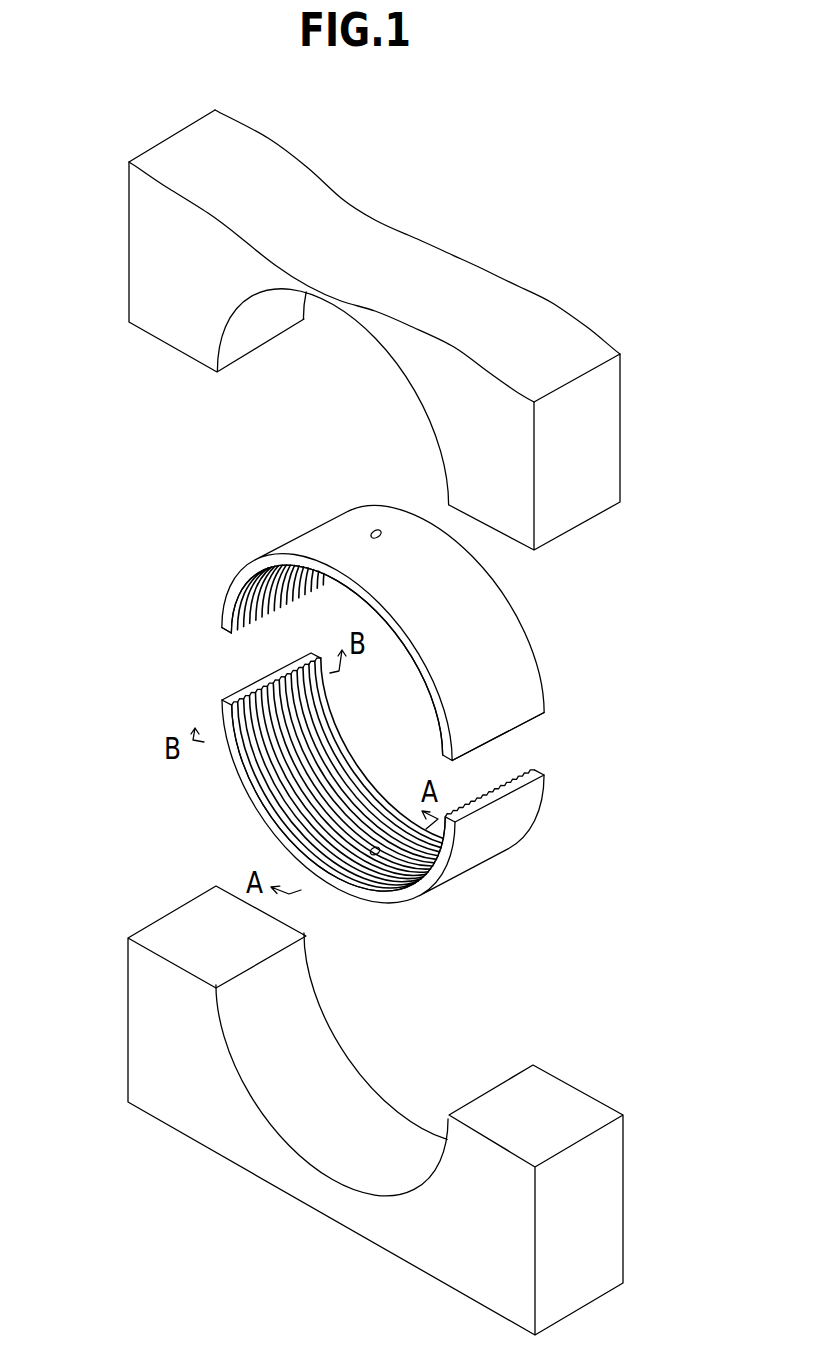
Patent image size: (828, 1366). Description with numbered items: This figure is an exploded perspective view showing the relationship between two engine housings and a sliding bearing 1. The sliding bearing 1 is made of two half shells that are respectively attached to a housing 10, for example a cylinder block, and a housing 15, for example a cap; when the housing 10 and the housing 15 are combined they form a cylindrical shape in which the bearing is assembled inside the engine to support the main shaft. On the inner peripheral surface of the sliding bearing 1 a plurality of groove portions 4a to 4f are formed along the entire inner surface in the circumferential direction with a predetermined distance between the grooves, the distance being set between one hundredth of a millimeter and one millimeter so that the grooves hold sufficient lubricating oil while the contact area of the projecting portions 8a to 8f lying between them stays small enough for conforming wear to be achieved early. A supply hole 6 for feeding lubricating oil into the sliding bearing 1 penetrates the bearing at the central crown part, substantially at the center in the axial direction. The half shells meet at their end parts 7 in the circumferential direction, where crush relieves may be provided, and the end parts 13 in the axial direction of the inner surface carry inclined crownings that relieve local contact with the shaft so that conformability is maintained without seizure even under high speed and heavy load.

The sliding bearing 1 is at (550, 890).
The groove portion 4a is at (256, 726).
The groove portion 4f is at (256, 726).
The projecting portion 8a is at (256, 726).
The projecting portion 8f is at (216, 752).
The supply hole 6 is at (367, 528).
The end part in the circumferential direction 7 is at (247, 673).
The housing 10 is at (596, 441).
The end part in the axial direction 13 is at (391, 500).
The housing 15 is at (590, 1191).